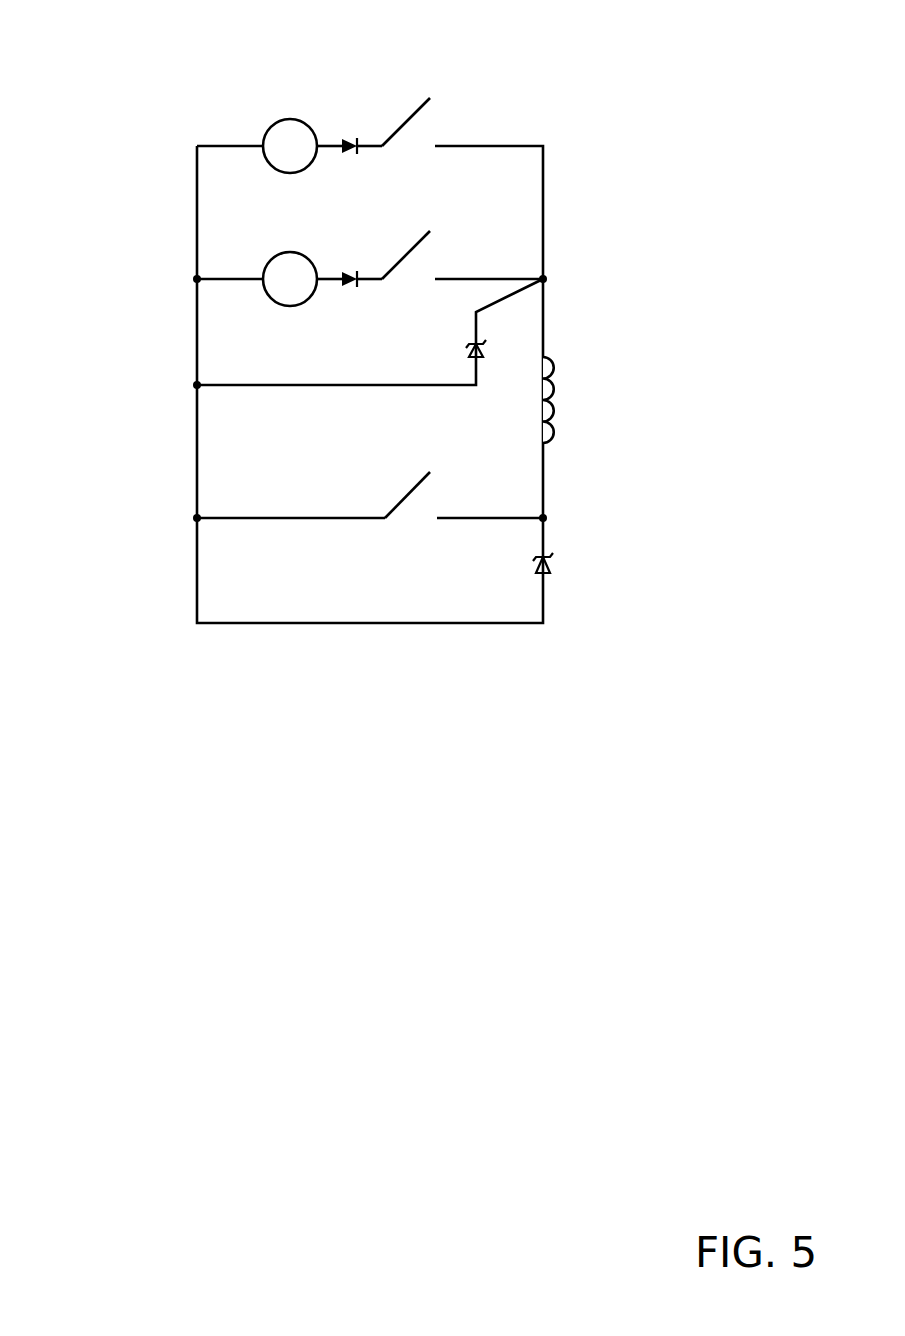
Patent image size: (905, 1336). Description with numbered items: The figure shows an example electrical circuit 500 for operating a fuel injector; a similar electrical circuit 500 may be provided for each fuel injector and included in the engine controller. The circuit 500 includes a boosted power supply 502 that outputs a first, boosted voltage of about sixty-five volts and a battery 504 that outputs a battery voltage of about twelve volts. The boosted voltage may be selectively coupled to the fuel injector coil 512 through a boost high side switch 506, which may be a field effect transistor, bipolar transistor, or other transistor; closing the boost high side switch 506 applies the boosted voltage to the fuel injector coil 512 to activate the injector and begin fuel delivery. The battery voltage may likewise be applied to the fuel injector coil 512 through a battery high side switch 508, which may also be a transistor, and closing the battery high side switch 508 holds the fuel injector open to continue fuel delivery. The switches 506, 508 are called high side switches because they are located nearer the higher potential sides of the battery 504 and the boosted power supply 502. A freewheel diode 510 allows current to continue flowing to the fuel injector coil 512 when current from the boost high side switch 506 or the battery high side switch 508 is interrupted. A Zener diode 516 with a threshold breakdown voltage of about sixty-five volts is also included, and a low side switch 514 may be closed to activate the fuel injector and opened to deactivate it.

The electrical circuit 500 is at (150, 44).
The boosted power supply 502 is at (288, 118).
The battery 504 is at (290, 252).
The boost high side switch 506 is at (407, 121).
The battery high side switch 508 is at (405, 254).
The freewheel diode 510 is at (468, 348).
The fuel injector coil 512 is at (543, 399).
The low side switch 514 is at (406, 496).
The Zener diode 516 is at (538, 557).